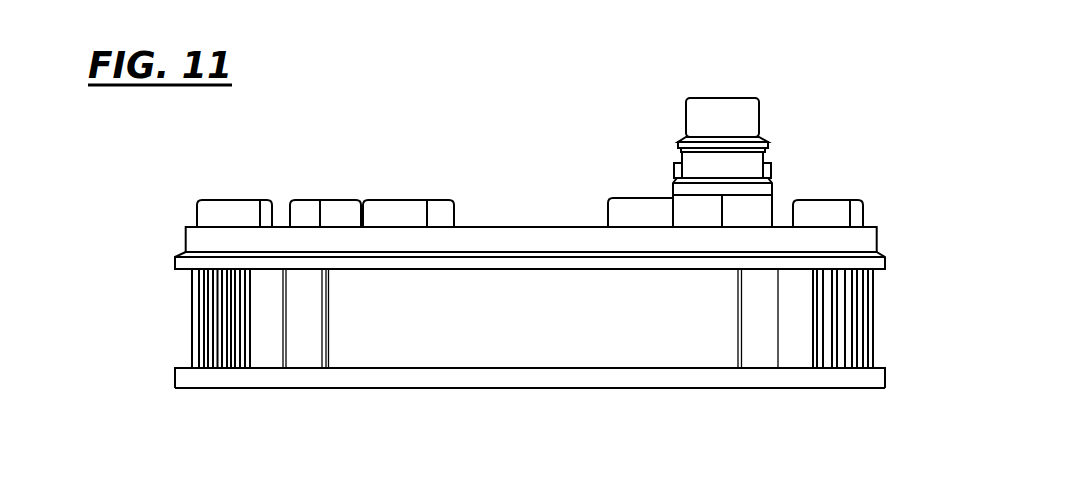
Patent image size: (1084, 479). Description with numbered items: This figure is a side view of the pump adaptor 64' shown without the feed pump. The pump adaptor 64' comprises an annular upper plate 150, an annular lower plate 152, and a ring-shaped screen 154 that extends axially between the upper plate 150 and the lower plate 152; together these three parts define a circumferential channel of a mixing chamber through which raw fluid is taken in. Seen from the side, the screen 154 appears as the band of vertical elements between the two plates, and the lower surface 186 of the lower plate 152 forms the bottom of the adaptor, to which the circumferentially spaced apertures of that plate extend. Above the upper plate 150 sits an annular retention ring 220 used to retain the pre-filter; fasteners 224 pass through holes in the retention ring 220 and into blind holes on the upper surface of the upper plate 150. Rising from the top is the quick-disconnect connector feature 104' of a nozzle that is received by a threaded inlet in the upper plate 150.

The pump adaptor 64' is at (504, 239).
The quick-disconnect connector feature 104' is at (692, 154).
The fasteners 224 is at (344, 200).
The retention ring 220 is at (562, 222).
The upper plate 150 is at (165, 268).
The lower plate 152 is at (165, 382).
The screen 154 is at (885, 322).
The lower surface 186 is at (610, 388).